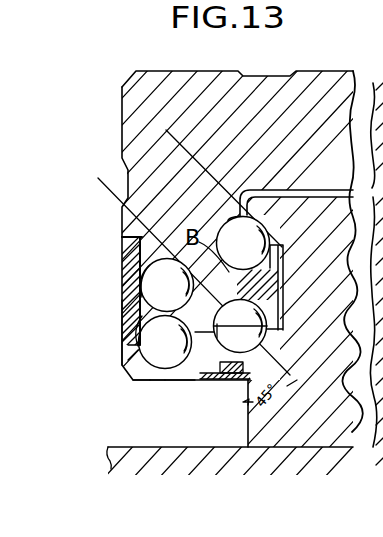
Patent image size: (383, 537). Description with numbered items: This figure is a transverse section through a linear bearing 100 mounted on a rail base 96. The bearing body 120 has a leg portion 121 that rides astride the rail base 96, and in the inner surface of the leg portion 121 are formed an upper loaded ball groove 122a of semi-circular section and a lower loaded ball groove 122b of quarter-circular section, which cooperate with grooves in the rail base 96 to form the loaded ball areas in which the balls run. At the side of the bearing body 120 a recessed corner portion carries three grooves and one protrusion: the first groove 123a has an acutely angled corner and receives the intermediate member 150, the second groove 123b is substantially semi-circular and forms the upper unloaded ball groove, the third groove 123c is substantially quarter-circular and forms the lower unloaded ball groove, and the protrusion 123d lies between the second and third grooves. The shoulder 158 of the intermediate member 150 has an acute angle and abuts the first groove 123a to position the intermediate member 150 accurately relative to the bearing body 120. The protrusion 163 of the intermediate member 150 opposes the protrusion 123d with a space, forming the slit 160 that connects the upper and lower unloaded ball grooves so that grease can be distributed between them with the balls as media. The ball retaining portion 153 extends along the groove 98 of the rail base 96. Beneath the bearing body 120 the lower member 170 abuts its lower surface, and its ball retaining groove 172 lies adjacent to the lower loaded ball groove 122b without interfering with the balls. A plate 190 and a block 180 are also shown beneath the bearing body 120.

The bearing assembly 100 is at (120, 78).
The bearing body 120 is at (115, 103).
The first groove 123a is at (127, 240).
The shoulder 158 is at (125, 256).
The second groove 123b is at (128, 281).
The protrusion 123d is at (128, 299).
The intermediate member 150 is at (105, 330).
The protrusion 163 is at (124, 340).
The slit 160 is at (124, 360).
The third groove 123c is at (140, 386).
The lower member 170 is at (140, 387).
The leg portion 121 is at (168, 386).
The shim plate 190 is at (196, 385).
The spacer block 180 is at (218, 376).
The rail base 96 is at (259, 420).
The upper loaded ball groove 122a is at (262, 216).
The groove 98 is at (266, 260).
The ball retaining portion 153 is at (283, 269).
The lower loaded ball groove 122b is at (266, 325).
The ball retaining groove 172 is at (252, 342).